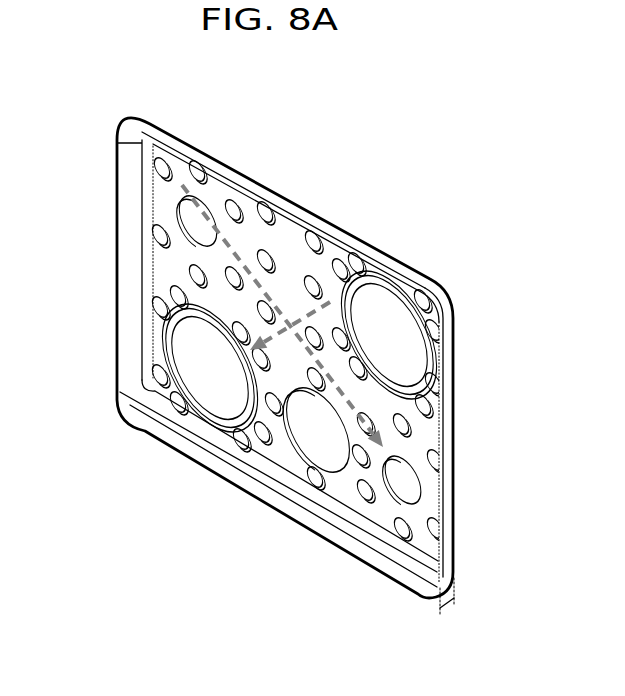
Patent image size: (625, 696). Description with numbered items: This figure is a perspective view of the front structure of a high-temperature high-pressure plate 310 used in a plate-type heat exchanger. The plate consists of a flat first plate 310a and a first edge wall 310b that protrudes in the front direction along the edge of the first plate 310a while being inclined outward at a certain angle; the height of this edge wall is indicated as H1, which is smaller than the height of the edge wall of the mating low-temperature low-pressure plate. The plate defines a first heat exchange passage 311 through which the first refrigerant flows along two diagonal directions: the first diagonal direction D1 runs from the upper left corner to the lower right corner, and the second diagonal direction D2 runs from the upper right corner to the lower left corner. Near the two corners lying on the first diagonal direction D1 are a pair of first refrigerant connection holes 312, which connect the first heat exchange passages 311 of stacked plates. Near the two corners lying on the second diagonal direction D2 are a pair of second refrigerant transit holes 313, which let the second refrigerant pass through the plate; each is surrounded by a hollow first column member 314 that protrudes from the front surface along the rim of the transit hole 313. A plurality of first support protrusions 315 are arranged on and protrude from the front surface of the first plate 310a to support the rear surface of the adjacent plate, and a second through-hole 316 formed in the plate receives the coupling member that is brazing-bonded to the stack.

The high-temperature high-pressure plate 310 is at (487, 218).
The first plate 310a is at (166, 186).
The first edge wall 310b is at (200, 156).
The first heat exchange passage 311 is at (289, 286).
The first refrigerant connection hole 312 is at (191, 215).
The second refrigerant transit hole 313 is at (196, 362).
The first column member 314 is at (168, 333).
The first support protrusion 315 is at (258, 254).
The second through-hole 316 is at (312, 429).
The first diagonal direction D1 is at (442, 330).
The second diagonal direction D2 is at (297, 332).
The height of the first edge wall H1 is at (452, 612).